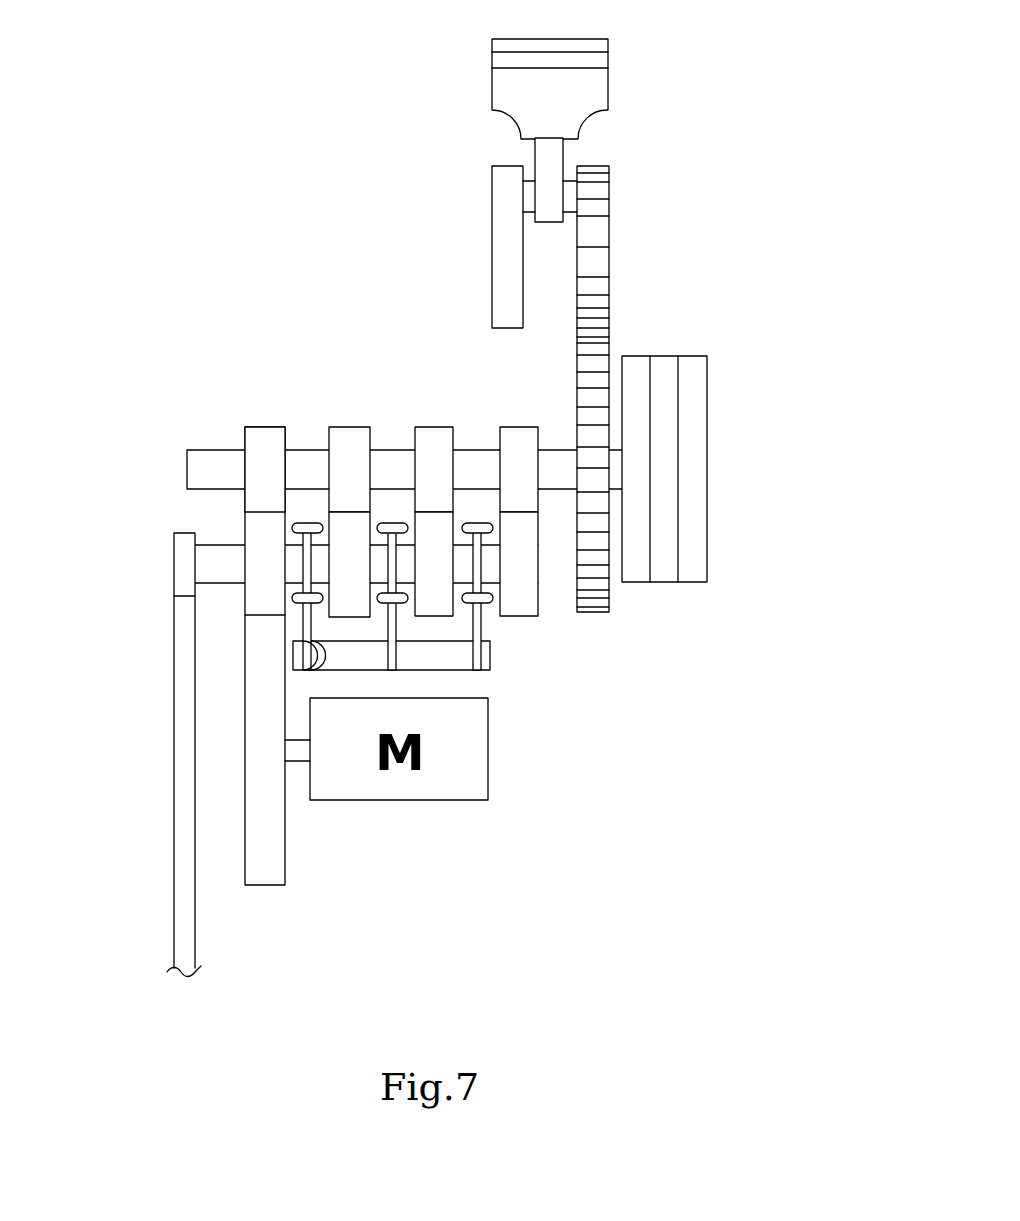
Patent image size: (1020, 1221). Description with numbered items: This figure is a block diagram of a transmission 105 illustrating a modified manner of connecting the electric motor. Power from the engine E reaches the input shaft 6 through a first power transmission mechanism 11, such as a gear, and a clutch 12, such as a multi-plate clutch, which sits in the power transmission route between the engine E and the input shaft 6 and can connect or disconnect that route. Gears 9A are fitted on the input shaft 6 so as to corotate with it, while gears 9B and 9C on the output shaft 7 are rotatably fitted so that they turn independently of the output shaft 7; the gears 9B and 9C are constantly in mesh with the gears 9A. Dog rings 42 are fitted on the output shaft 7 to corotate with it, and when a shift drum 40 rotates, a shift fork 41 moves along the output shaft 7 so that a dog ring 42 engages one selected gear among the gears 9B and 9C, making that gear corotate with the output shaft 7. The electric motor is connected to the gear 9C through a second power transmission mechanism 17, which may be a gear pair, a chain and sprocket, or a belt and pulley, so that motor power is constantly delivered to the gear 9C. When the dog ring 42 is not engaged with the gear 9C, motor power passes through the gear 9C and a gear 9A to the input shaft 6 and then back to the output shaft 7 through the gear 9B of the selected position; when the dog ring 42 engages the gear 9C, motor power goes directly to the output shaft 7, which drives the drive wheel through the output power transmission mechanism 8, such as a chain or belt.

The engine E is at (641, 70).
The transmission 105 is at (213, 398).
The input shaft 6 is at (196, 468).
The output shaft 7 is at (213, 565).
The output power transmission mechanism 8 is at (175, 818).
The gears 9A is at (520, 427).
The gears 9B is at (432, 617).
The gear 9C is at (256, 598).
The first power transmission mechanism 11 is at (609, 207).
The clutch 12 is at (707, 463).
The second power transmission mechanism 17 is at (245, 748).
The shift drum 40 is at (490, 655).
The shift fork 41 is at (398, 620).
The dog rings 42 is at (298, 527).